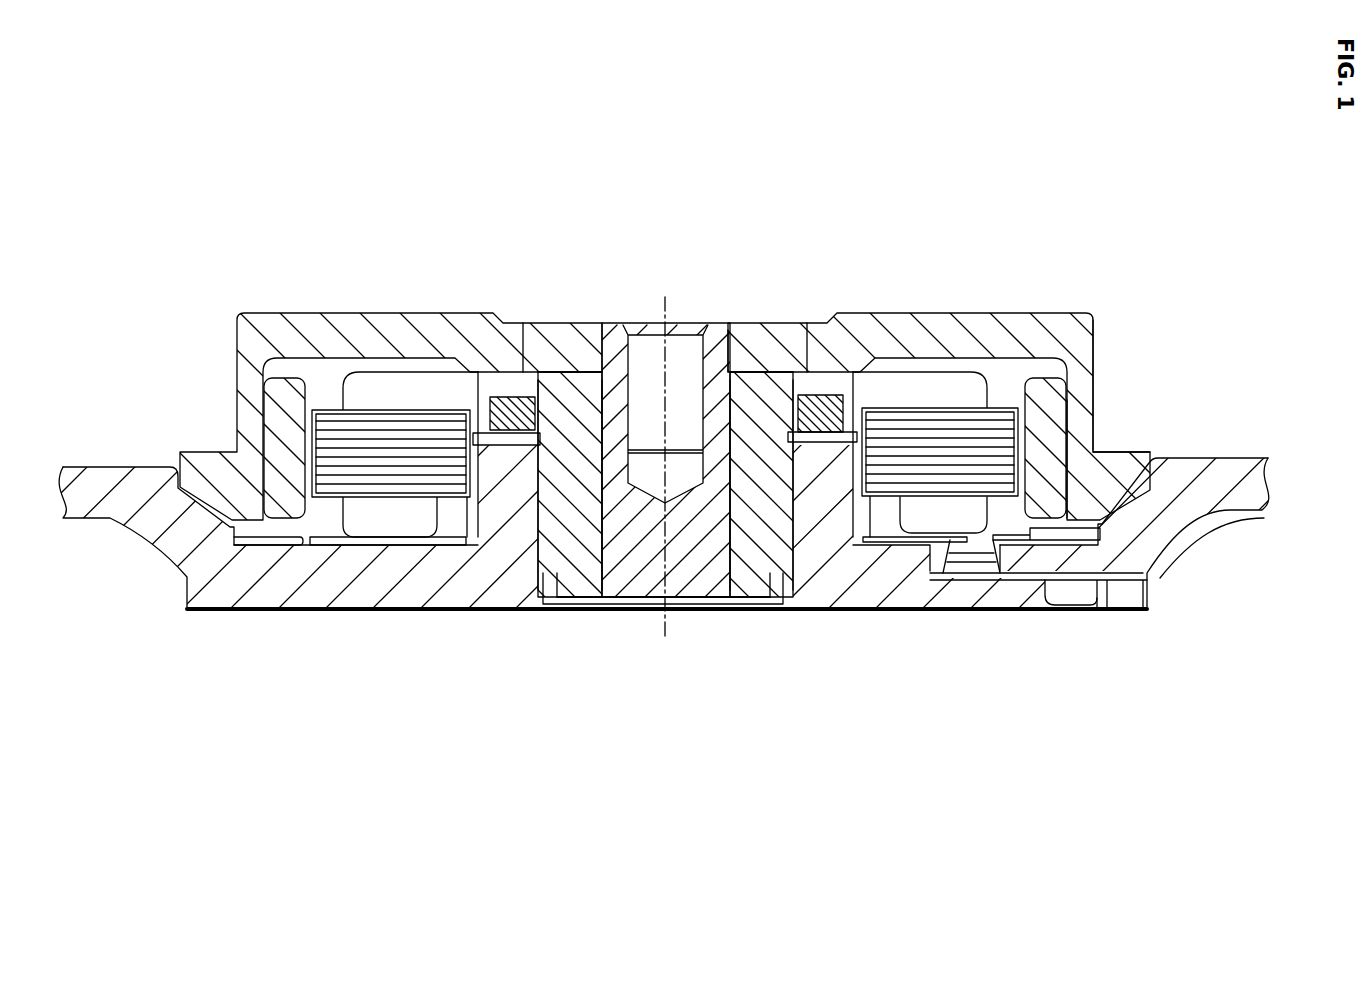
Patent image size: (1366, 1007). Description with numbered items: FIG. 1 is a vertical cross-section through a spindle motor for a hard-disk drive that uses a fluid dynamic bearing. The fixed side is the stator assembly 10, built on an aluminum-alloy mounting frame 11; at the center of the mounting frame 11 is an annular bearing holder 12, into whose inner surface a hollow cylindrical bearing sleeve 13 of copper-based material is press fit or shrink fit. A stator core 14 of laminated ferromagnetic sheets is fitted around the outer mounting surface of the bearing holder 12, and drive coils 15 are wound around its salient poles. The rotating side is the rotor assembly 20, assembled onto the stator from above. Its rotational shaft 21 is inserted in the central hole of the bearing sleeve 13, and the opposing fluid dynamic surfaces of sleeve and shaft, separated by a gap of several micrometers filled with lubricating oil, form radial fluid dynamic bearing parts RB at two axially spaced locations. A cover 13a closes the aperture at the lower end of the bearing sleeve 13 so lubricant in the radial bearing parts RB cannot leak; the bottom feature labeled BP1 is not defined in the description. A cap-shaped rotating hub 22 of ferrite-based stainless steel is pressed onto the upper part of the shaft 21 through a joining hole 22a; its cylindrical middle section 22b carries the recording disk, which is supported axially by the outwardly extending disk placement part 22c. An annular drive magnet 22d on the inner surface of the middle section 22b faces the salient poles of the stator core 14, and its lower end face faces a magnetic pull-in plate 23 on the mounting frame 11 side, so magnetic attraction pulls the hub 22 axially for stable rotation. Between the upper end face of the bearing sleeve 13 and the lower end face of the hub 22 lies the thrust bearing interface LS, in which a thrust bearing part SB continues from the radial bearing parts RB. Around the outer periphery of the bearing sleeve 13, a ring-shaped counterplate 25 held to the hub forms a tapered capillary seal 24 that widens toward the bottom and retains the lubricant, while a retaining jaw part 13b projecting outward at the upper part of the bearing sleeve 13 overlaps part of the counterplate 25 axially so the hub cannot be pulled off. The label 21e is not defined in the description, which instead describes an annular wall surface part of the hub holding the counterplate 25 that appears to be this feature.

The stator assembly 10 is at (988, 654).
The mounting frame 11 is at (907, 595).
The bearing holder 12 is at (513, 505).
The bearing sleeve 13 is at (773, 535).
The cover 13a is at (633, 607).
The retaining jaw part 13b is at (585, 372).
The stator core 14 is at (313, 372).
The drive coils 15 is at (383, 400).
The rotor assembly 20 is at (1047, 289).
The rotational shaft 21 is at (650, 323).
The shaft end portion 21e is at (843, 395).
The rotating hub 22 is at (925, 313).
The joining hole 22a is at (742, 368).
The middle section 22b is at (1093, 365).
The disk placement part 22c is at (1113, 440).
The drive magnet 22d is at (1047, 497).
The magnetic pull-in plate 23 is at (1067, 533).
The capillary seal part 24 is at (797, 437).
The counterplate 25 is at (830, 396).
The thrust bearing part SB is at (545, 372).
The thrust bearing interface LS is at (583, 370).
The radial fluid dynamic bearing parts RB is at (729, 403).
The bottom plate BP1 is at (757, 604).